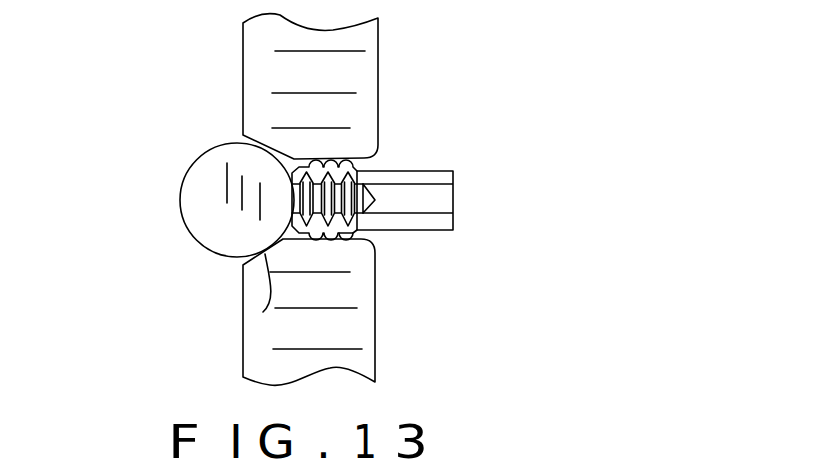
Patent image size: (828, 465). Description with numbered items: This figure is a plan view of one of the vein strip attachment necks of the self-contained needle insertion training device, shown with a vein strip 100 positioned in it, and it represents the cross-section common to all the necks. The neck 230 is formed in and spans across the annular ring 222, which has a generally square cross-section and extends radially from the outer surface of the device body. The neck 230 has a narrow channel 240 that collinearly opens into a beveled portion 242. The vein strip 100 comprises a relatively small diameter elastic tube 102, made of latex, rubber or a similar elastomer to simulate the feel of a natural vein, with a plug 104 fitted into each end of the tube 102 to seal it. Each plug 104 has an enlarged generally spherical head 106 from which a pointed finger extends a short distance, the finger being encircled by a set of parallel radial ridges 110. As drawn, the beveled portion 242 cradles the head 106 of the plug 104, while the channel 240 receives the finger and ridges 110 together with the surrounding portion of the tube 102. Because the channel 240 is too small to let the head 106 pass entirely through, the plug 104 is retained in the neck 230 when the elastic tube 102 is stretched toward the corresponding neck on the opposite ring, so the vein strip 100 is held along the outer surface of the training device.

The vein strip 100 is at (138, 205).
The elastic tube 102 is at (435, 229).
The plug 104 is at (210, 147).
The head 106 is at (220, 222).
The radial ridges 110 is at (352, 215).
The annular ring 222 is at (352, 62).
The neck 230 is at (391, 143).
The channel 240 is at (327, 239).
The beveled portion 242 is at (263, 312).